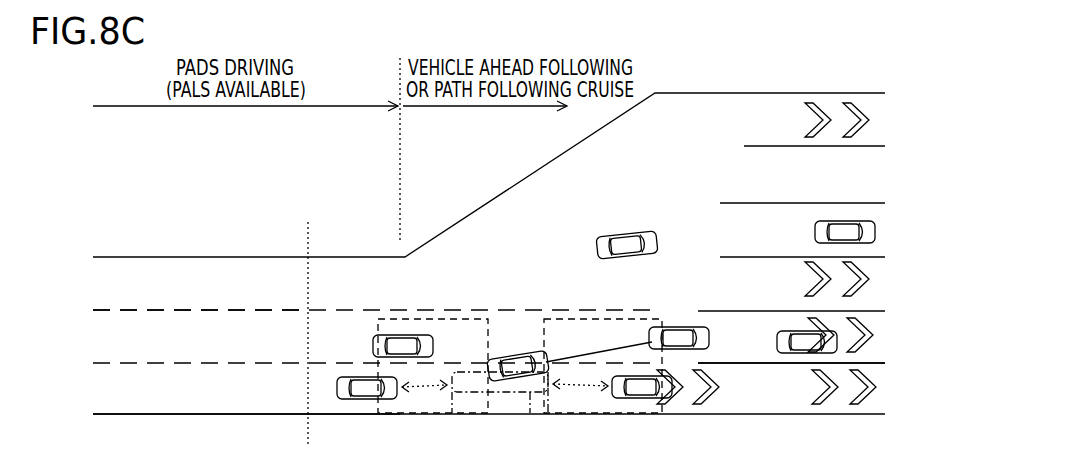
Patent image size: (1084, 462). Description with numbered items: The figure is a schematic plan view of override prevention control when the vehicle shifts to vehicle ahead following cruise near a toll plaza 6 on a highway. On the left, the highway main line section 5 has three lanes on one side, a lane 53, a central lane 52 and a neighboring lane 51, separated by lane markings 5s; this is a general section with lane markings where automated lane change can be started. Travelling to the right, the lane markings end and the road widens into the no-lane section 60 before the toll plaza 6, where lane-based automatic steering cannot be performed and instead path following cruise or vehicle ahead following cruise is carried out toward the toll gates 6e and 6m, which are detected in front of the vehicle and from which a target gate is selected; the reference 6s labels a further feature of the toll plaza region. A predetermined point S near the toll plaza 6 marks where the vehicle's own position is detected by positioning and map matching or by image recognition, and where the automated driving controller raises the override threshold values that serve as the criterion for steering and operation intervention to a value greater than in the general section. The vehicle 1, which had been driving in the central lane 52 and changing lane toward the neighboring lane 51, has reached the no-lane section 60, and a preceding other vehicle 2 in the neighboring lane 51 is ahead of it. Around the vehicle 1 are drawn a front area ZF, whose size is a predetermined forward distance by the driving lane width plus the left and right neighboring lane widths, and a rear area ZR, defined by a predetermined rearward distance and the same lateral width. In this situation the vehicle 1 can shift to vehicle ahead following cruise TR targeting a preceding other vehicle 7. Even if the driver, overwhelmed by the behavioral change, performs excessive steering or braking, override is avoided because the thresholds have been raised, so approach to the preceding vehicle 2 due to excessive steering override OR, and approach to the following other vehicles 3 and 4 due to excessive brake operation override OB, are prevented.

The vehicle 1 is at (510, 354).
The preceding other vehicle 2 is at (643, 398).
The following other vehicle 3 is at (412, 335).
The following other vehicle 4 is at (370, 399).
The main line section 5 is at (230, 257).
The lane markings 5s is at (205, 308).
The toll plaza 6 is at (500, 195).
The toll gate 6m is at (881, 226).
The toll gate 6e is at (873, 340).
The branch road start line 6s is at (770, 367).
The preceding other vehicle 7 is at (676, 328).
The neighboring lane 51 is at (110, 395).
The central lane 52 is at (110, 341).
The lane 53 is at (110, 287).
The no-lane section 60 is at (637, 190).
The predetermined point S is at (309, 318).
The rear area ZR is at (464, 318).
The front area ZF is at (610, 318).
The vehicle ahead following cruise TR is at (590, 352).
The excessive brake operation override OB is at (455, 413).
The excessive steering override OR is at (530, 396).